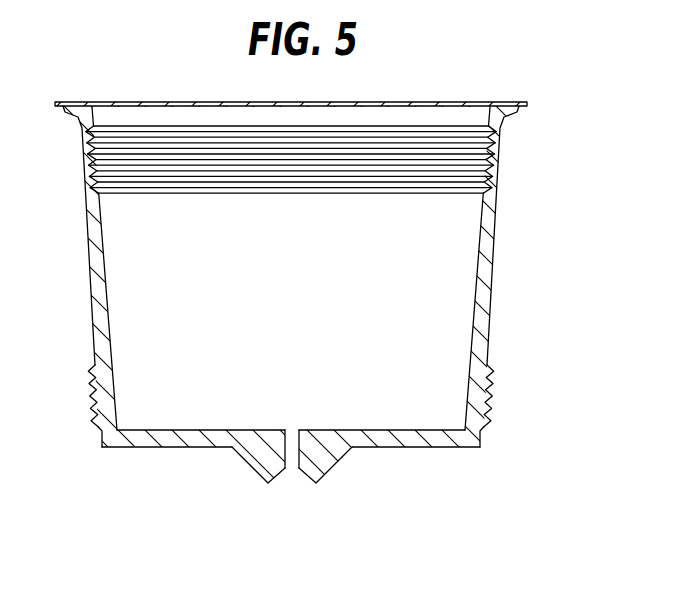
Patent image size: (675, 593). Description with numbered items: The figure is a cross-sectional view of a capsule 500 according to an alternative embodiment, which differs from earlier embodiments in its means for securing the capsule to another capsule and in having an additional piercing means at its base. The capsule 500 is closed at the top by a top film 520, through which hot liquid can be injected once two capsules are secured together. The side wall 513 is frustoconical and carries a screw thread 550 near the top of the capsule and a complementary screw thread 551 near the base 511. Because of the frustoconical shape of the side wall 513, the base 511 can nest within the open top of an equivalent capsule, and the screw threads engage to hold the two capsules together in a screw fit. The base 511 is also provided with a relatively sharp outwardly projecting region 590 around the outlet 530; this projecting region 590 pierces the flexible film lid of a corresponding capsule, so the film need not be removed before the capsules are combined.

The capsule 500 is at (337, 296).
The base 511 is at (413, 442).
The side wall 513 is at (482, 303).
The top film 520 is at (473, 100).
The outlet 530 is at (292, 460).
The screw thread 550 is at (495, 160).
The complementary screw thread 551 is at (486, 394).
The outwardly projecting region 590 is at (262, 458).